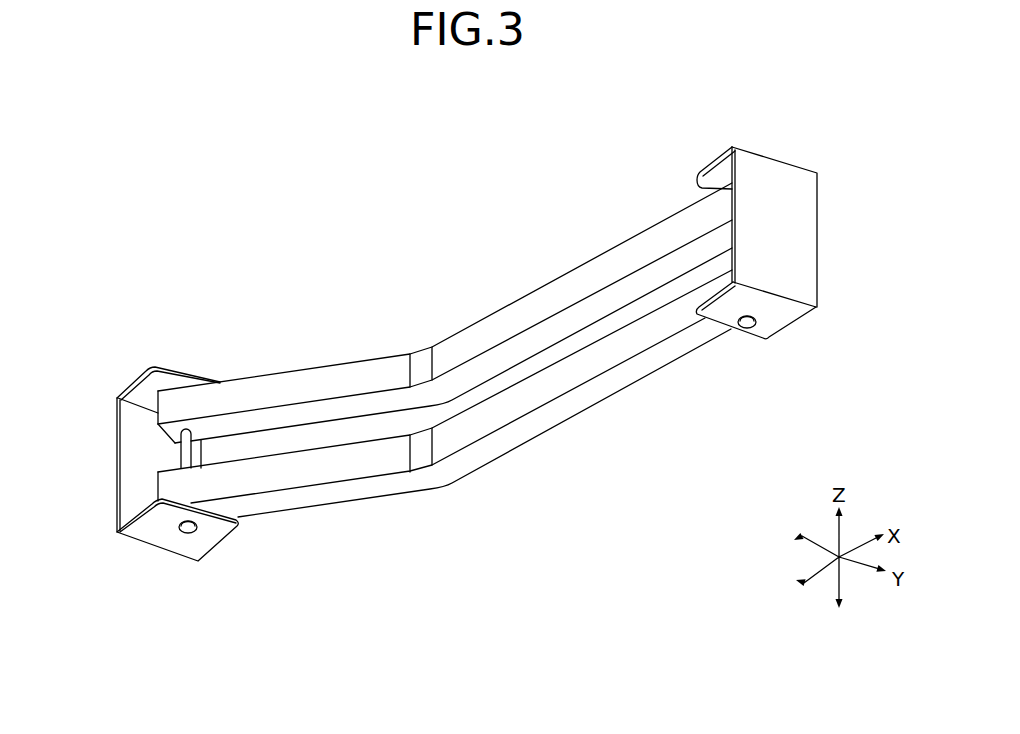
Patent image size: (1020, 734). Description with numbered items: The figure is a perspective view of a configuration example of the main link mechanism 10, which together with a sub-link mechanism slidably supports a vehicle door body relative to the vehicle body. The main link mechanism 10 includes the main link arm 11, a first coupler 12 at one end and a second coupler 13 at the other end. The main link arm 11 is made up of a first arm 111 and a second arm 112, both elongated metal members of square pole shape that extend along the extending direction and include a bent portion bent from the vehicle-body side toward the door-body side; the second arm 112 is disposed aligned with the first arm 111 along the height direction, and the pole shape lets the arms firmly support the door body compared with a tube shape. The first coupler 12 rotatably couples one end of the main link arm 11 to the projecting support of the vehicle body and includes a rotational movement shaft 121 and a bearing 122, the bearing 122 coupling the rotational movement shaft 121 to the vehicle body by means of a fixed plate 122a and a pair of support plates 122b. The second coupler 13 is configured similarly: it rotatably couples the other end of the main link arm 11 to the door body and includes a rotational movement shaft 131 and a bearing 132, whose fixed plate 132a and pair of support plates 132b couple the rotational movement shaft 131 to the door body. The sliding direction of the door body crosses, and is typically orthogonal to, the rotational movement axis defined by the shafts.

The main link mechanism 10 is at (402, 281).
The main link arm 11 is at (445, 380).
The first arm 111 is at (275, 398).
The second arm 112 is at (346, 470).
The first coupler 12 is at (795, 146).
The rotational movement shaft 121 is at (750, 330).
The bearing 122 is at (744, 287).
The fixed plate 122a is at (782, 232).
The support plates 122b is at (720, 179).
The second coupler 13 is at (193, 342).
The rotational movement shaft 131 is at (181, 458).
The bearing 132 is at (131, 459).
The fixed plate 132a is at (130, 440).
The support plates 132b is at (121, 603).